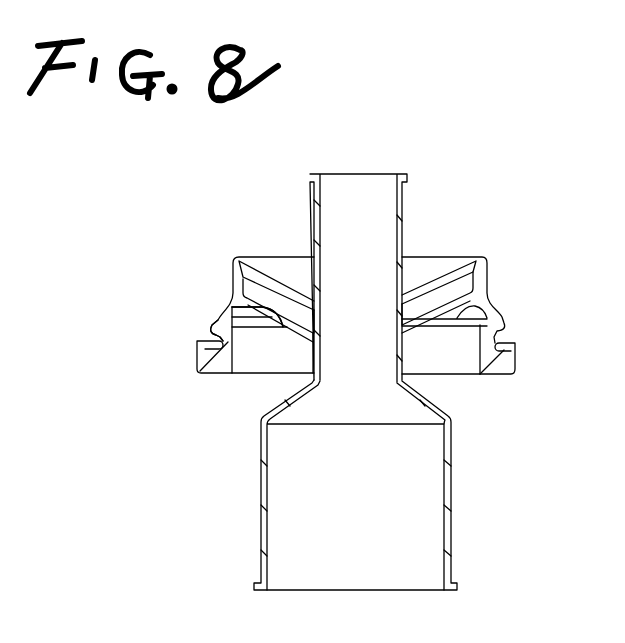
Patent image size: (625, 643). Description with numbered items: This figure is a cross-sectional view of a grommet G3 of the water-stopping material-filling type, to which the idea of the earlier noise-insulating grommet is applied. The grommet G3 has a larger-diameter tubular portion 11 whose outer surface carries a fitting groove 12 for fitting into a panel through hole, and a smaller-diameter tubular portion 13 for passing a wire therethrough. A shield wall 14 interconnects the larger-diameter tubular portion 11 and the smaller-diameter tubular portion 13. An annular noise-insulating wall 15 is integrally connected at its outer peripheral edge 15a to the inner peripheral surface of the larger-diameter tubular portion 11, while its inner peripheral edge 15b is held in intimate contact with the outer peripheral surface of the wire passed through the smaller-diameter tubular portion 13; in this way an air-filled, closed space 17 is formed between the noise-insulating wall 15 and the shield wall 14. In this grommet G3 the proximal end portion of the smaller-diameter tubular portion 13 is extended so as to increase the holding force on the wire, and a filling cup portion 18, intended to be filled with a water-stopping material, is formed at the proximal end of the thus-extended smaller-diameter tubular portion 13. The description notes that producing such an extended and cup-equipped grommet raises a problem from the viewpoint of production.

The larger-diameter tubular portion 11 is at (200, 375).
The fitting groove 12 is at (198, 341).
The smaller-diameter tubular portion 13 is at (402, 200).
The shield wall 14 is at (269, 257).
The noise-insulating wall 15 is at (247, 328).
The outer peripheral edge 15a is at (273, 322).
The inner peripheral edge 15b is at (310, 338).
The closed space 17 is at (430, 300).
The filling cup portion 18 is at (451, 490).
The grommet G3 is at (482, 222).